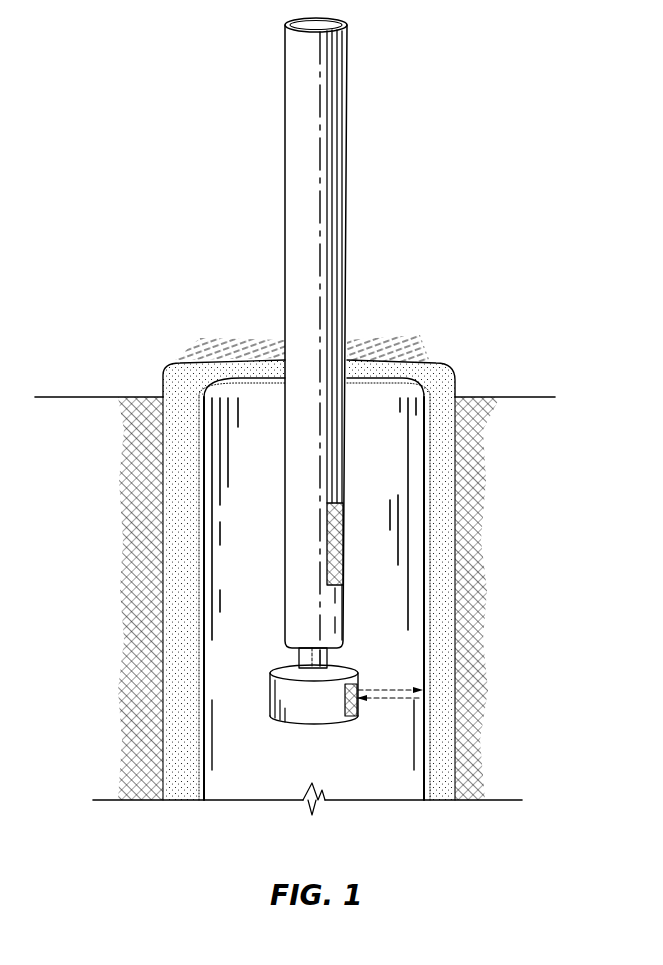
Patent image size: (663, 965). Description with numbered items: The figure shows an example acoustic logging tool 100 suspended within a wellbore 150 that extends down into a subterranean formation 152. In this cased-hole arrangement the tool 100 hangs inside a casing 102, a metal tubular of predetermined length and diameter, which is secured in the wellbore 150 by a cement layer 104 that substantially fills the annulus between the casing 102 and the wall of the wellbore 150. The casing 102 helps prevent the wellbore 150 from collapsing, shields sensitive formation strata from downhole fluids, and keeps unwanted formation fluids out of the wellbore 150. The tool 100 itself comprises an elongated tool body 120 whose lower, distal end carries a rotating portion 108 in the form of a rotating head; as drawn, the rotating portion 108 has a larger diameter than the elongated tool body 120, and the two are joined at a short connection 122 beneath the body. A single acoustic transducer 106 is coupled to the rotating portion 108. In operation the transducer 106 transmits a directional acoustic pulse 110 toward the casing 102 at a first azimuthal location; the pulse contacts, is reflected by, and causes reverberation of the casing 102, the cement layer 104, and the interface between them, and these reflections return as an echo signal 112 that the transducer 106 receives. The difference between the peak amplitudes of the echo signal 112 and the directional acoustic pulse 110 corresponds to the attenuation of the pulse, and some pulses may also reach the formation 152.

The acoustic logging tool 100 is at (388, 395).
The casing 102 is at (258, 377).
The cement layer 104 is at (443, 486).
The acoustic transducer 106 is at (343, 704).
The rotating portion 108 is at (268, 705).
The directional acoustic pulse 110 is at (400, 687).
The echo signal 112 is at (395, 701).
The elongated tool body 120 is at (343, 213).
The coupling 122 is at (297, 663).
The wellbore 150 is at (186, 550).
The subterranean formation 152 is at (457, 553).